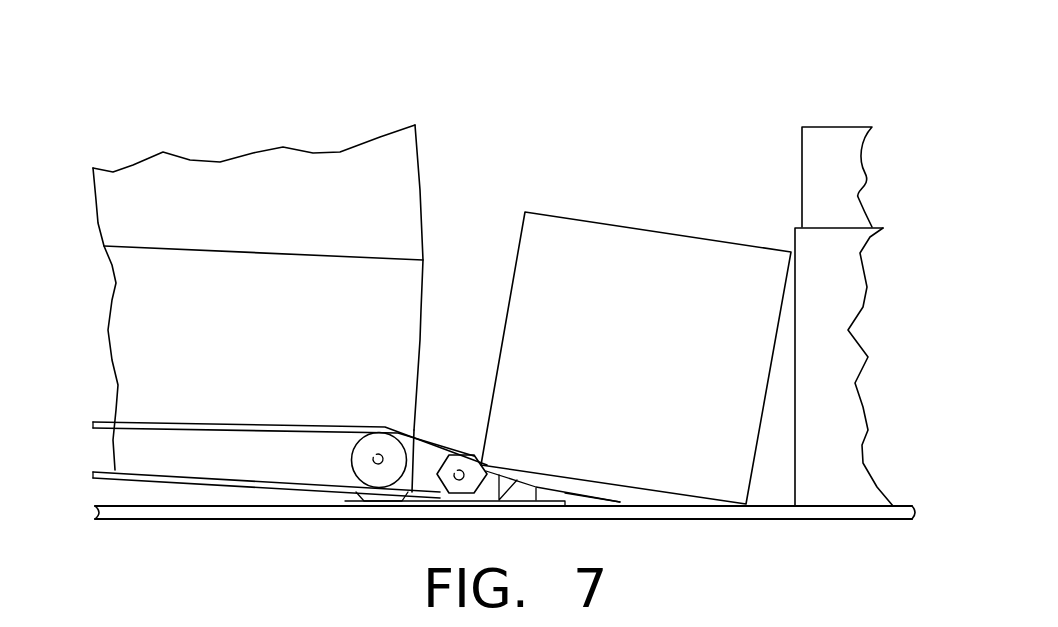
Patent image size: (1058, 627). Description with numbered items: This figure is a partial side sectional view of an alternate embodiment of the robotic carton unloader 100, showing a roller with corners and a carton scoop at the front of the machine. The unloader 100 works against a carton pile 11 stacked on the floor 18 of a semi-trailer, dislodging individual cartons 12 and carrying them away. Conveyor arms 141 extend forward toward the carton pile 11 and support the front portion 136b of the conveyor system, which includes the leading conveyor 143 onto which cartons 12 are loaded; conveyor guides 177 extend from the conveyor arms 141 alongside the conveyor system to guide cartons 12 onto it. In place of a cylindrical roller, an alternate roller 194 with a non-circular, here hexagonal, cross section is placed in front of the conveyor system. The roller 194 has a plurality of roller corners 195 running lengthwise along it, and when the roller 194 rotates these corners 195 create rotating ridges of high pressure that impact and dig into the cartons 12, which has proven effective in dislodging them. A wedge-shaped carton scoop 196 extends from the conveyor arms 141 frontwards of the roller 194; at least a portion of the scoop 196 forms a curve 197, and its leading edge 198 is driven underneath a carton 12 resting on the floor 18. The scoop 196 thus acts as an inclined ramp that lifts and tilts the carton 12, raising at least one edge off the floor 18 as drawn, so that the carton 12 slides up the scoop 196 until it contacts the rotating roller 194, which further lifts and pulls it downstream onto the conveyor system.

The robotic carton unloader 100 is at (452, 148).
The carton pile 11 is at (827, 107).
The carton 12 is at (605, 263).
The floor 18 is at (770, 506).
The conveyor guide 177 is at (173, 347).
The front portion of conveyor system 136b is at (272, 528).
The roller corners 195 is at (440, 448).
The leading conveyor 143 is at (225, 453).
The conveyor arms 141 is at (427, 470).
The alternate roller 194 is at (458, 490).
The carton scoop 196 is at (526, 476).
The curve 197 is at (573, 495).
The leading edge 198 is at (620, 500).